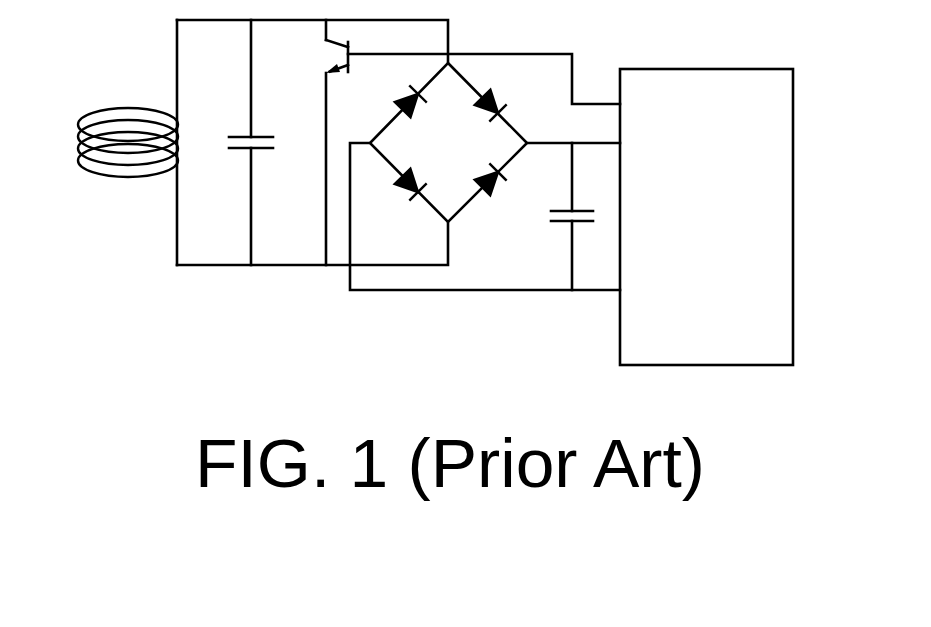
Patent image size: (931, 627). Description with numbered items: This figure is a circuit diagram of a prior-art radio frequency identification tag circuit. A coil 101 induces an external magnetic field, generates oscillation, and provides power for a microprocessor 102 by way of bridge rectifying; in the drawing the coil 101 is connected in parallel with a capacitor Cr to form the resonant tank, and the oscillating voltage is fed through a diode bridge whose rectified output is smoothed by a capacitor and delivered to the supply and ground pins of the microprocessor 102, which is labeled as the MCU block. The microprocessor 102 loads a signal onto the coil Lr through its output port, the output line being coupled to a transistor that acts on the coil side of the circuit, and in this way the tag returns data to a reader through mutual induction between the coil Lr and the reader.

The coil 101 is at (128, 172).
The microprocessor 102 is at (710, 68).
The coil Lr is at (128, 121).
The resonant capacitor Cr is at (264, 142).